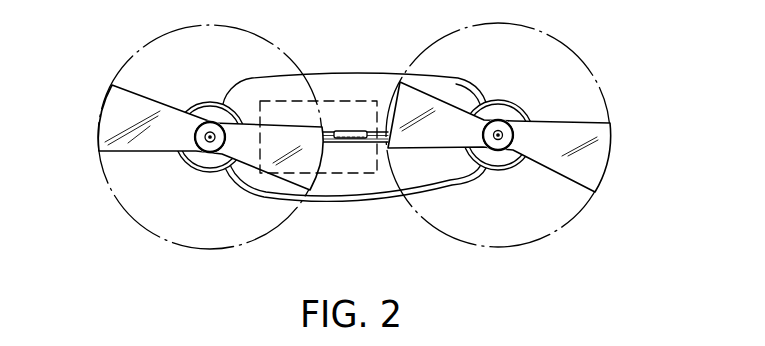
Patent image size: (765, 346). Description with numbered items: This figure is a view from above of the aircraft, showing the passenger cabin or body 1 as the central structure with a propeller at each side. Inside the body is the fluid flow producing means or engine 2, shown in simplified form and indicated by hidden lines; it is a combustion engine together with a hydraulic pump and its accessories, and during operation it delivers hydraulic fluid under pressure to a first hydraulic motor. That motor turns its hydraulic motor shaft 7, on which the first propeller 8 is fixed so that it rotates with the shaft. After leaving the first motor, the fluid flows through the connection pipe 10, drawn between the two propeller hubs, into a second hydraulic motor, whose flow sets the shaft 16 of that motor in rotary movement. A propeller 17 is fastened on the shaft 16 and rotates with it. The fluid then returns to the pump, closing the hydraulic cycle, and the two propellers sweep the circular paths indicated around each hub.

The passenger cabin or body of the aircraft 1 is at (385, 79).
The fluid flow producing means or engine 2 is at (329, 101).
The hydraulic motor shaft 7 is at (207, 143).
The first propeller 8 is at (110, 121).
The connection pipe 10 is at (349, 130).
The shaft of the second hydraulic motor 16 is at (498, 135).
The propeller 17 is at (604, 152).